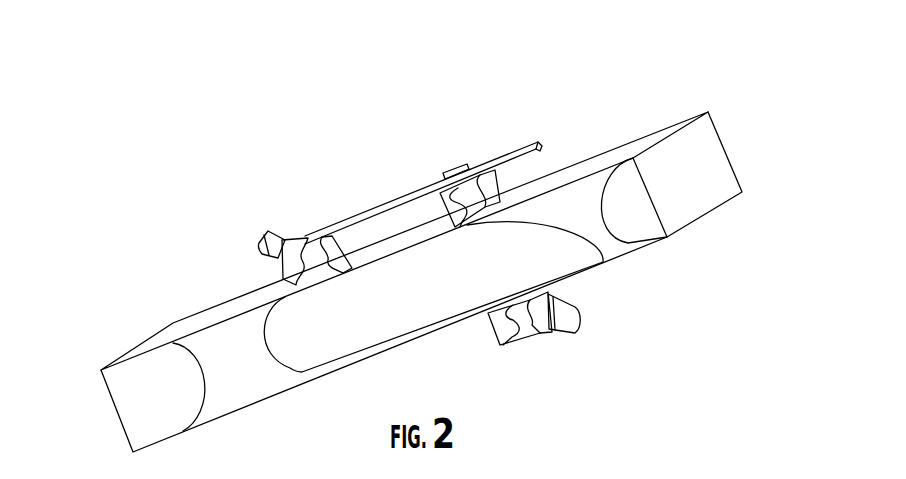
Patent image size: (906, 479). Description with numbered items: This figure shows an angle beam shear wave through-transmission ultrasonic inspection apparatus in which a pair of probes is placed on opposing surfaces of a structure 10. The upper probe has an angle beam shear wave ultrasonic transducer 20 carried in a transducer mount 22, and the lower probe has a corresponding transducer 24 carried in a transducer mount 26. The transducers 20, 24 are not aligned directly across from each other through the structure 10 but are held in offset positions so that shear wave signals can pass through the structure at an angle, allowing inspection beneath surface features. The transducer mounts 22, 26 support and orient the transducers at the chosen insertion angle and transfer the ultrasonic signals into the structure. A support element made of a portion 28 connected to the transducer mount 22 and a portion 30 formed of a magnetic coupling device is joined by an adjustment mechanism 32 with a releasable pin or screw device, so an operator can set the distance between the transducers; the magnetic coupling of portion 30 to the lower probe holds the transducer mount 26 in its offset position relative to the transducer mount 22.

The structure 10 is at (590, 192).
The transducer 20 is at (262, 240).
The transducer mount 22 is at (283, 262).
The transducer 24 is at (578, 322).
The transducer mount 26 is at (592, 272).
The support element portion 28 is at (517, 153).
The support element portion 30 is at (462, 192).
The adjustment mechanism 32 is at (455, 170).